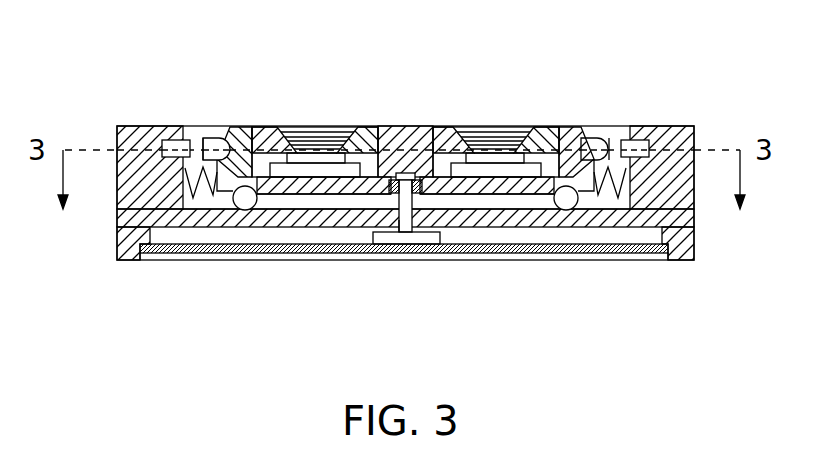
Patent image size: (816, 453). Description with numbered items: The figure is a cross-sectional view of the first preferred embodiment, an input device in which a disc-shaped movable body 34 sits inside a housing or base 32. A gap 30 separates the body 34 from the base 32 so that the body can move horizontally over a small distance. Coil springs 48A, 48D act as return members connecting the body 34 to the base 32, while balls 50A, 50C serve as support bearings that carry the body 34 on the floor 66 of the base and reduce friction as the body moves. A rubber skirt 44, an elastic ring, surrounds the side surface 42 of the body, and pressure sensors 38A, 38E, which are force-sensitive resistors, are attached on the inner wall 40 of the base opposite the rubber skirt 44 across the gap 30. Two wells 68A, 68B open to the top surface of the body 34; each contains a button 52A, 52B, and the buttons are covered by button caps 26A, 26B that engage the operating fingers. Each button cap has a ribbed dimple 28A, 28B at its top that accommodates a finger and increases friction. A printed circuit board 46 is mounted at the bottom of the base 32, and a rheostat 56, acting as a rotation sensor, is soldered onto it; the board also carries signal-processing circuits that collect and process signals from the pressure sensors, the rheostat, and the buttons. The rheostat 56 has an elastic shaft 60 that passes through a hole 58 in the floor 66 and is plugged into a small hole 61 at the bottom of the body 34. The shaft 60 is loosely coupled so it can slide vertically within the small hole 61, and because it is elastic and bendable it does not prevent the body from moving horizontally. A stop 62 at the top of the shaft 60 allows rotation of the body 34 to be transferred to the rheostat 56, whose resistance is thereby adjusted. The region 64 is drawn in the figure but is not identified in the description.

The base 32 is at (125, 143).
The pressure sensor 38A is at (171, 140).
The inner wall 40 is at (201, 137).
The side surface 42 is at (208, 138).
The rubber skirt 44 is at (238, 135).
The dimple 28A is at (302, 142).
The button cap 26A is at (368, 137).
The well 68A is at (367, 163).
The small hole 61 is at (408, 130).
The button cap 26B is at (449, 137).
The well 68B is at (444, 163).
The dimple 28B is at (505, 142).
The movable body 34 is at (574, 141).
The gap 30 is at (612, 136).
The pressure sensor 38E is at (638, 142).
The printed circuit board 46 is at (152, 250).
The coil spring 48A is at (204, 171).
The ball 50A is at (243, 208).
The button 52A is at (287, 170).
The rheostat 56 is at (380, 229).
The hole 58 is at (395, 224).
The shaft 60 is at (404, 218).
The stop 62 is at (415, 193).
The gap 64 is at (462, 196).
The floor 66 is at (498, 194).
The button 52B is at (523, 173).
The ball 50C is at (569, 207).
The coil spring 48D is at (611, 180).